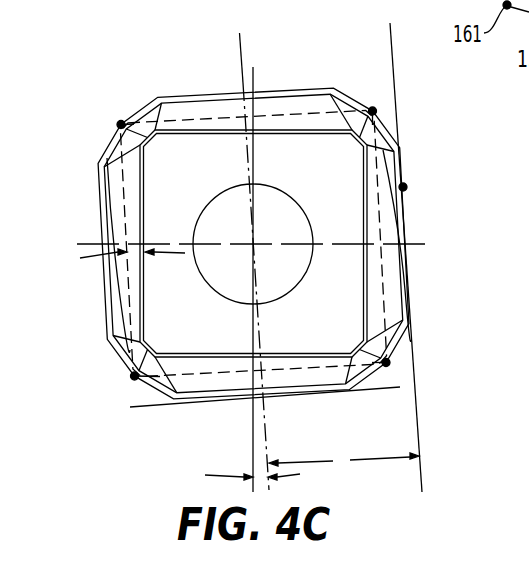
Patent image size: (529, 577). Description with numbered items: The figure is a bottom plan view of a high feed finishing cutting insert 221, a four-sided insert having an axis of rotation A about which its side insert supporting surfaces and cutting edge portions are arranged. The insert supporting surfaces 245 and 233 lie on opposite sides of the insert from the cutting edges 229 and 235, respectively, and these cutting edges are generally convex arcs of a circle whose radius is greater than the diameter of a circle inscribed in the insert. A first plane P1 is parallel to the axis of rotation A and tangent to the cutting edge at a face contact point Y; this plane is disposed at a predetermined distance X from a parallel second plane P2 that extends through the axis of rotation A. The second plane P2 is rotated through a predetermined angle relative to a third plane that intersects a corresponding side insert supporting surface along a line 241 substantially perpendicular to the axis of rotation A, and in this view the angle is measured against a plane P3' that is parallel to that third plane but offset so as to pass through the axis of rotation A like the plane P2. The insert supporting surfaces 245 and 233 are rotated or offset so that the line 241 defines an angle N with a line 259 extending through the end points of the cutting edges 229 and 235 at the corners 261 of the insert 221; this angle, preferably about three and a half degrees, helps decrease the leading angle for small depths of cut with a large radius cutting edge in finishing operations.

The cutting insert 221 is at (324, 71).
The cutting edge 235 is at (166, 92).
The line 259 is at (289, 116).
The corners 261 is at (119, 124).
The line 241 is at (143, 203).
The axis of rotation A is at (253, 244).
The cutting edge 229 is at (405, 159).
The face contact point Y is at (410, 185).
The insert supporting surface 245 is at (118, 212).
The insert supporting surface 233 is at (193, 382).
The plane P3' is at (282, 251).
The second plane P2 is at (240, 50).
The first plane P1 is at (400, 63).
The angle N is at (125, 260).
The distance X is at (344, 458).